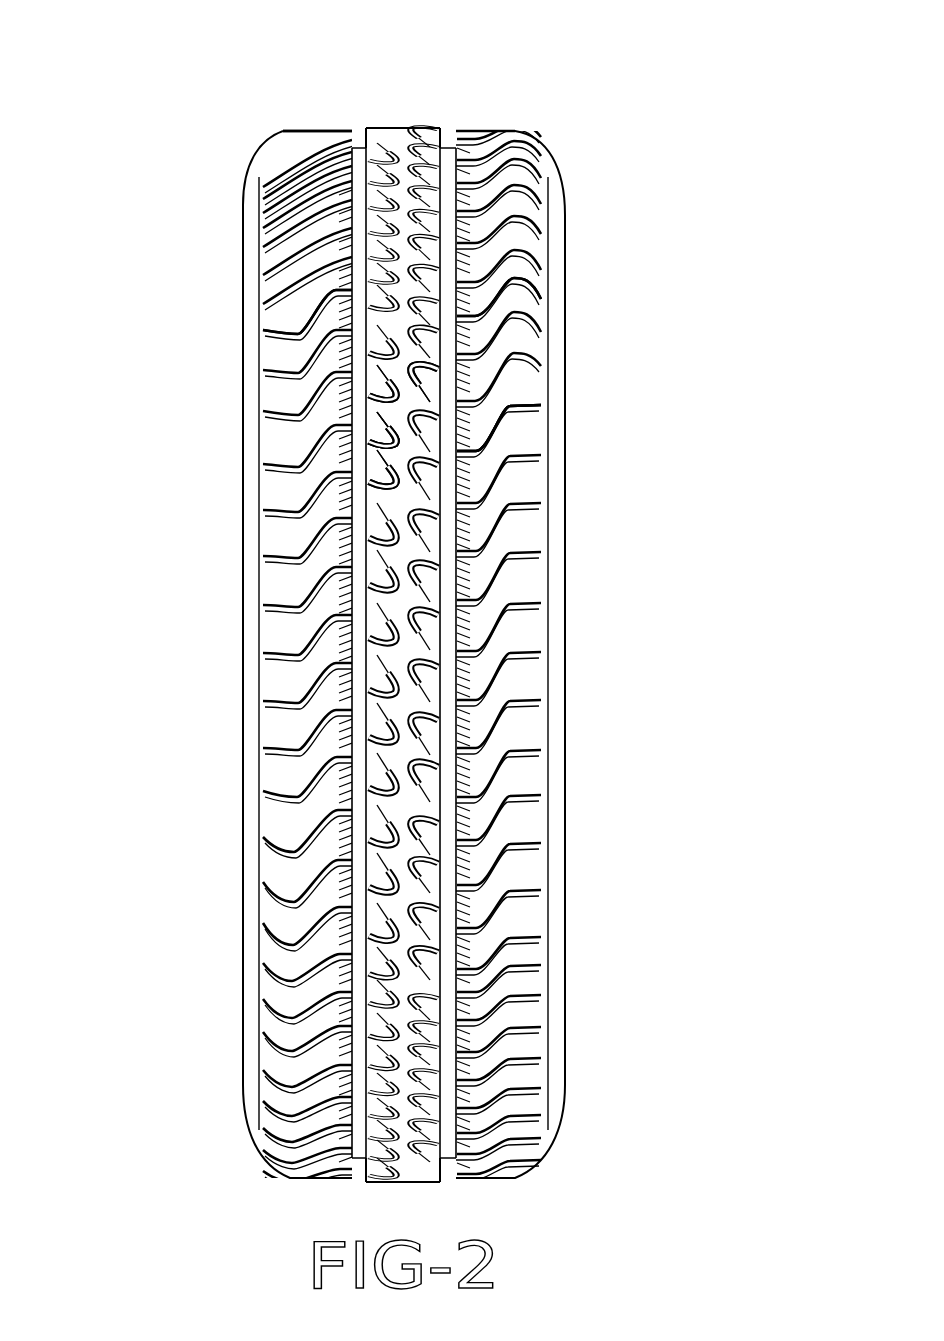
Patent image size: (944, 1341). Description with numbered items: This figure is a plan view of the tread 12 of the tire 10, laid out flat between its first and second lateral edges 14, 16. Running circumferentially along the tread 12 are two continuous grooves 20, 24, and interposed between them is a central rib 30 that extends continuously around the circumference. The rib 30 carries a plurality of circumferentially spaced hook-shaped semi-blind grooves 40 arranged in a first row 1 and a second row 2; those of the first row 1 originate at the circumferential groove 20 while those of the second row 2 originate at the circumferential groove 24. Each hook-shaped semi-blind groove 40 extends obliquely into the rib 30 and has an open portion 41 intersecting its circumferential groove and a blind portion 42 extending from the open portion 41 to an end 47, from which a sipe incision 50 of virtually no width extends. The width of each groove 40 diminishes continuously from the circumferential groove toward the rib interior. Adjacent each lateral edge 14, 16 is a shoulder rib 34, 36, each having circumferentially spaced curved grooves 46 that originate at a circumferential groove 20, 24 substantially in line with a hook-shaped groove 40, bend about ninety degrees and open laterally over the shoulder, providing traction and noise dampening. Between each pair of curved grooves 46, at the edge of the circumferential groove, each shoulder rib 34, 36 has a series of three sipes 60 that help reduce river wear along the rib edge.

The tire 10 is at (102, 126).
The tread 12 is at (487, 332).
The first lateral edge 14 is at (288, 130).
The second lateral edge 16 is at (523, 130).
The circumferentially continuous groove 20 is at (360, 138).
The circumferentially continuous groove 24 is at (450, 138).
The rib 30 is at (400, 130).
The first row 1 is at (372, 130).
The second row 2 is at (438, 130).
The shoulder rib 34 is at (325, 247).
The shoulder rib 36 is at (515, 243).
The hook-shaped semi-blind groove 40 is at (375, 393).
The open portion 41 is at (372, 440).
The blind portion 42 is at (396, 445).
The curved groove 46 is at (308, 318).
The end 47 is at (440, 365).
The sipe incision 50 is at (378, 370).
The sipes 60 is at (462, 430).